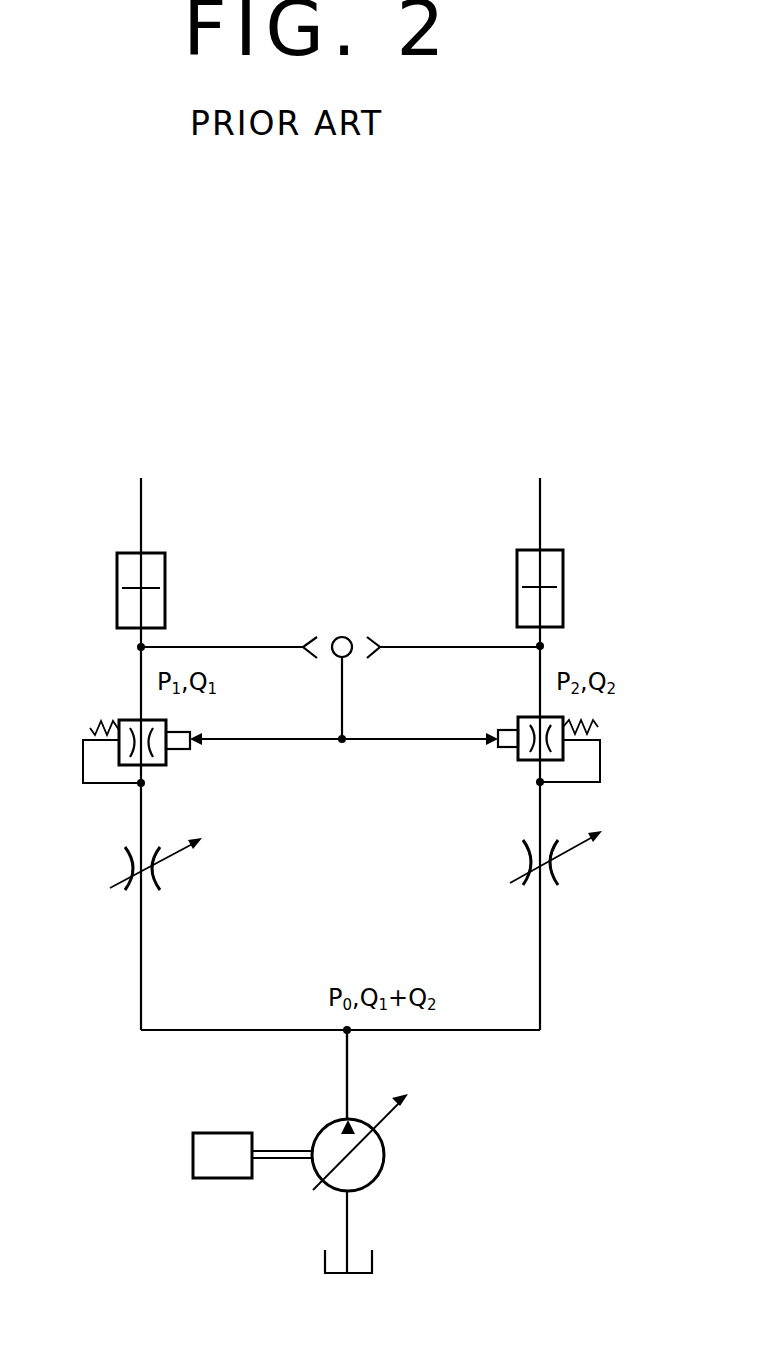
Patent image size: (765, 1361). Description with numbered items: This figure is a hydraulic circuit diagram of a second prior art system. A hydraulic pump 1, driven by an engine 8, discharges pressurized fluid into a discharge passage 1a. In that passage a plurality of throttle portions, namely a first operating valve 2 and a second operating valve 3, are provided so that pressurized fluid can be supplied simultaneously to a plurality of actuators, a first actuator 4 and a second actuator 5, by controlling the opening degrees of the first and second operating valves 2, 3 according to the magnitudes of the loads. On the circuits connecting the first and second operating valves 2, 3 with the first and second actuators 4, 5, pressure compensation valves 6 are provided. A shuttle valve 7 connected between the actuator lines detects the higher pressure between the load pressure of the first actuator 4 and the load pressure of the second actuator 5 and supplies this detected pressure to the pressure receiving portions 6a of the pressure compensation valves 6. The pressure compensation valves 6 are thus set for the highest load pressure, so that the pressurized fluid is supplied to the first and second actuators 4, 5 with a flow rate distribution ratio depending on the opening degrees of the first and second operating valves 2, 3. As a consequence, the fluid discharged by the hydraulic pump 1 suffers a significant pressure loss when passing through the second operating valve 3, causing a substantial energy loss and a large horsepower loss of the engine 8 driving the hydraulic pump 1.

The hydraulic pump 1 is at (386, 1158).
The discharge passage 1a is at (346, 1078).
The first operating valve 2 is at (125, 862).
The second operating valve 3 is at (520, 857).
The first actuator 4 is at (118, 566).
The second actuator 5 is at (564, 561).
The pressure compensation valve 6 is at (128, 720).
The pressure receiving portion 6a is at (193, 742).
The shuttle valve 7 is at (354, 636).
The engine 8 is at (193, 1152).